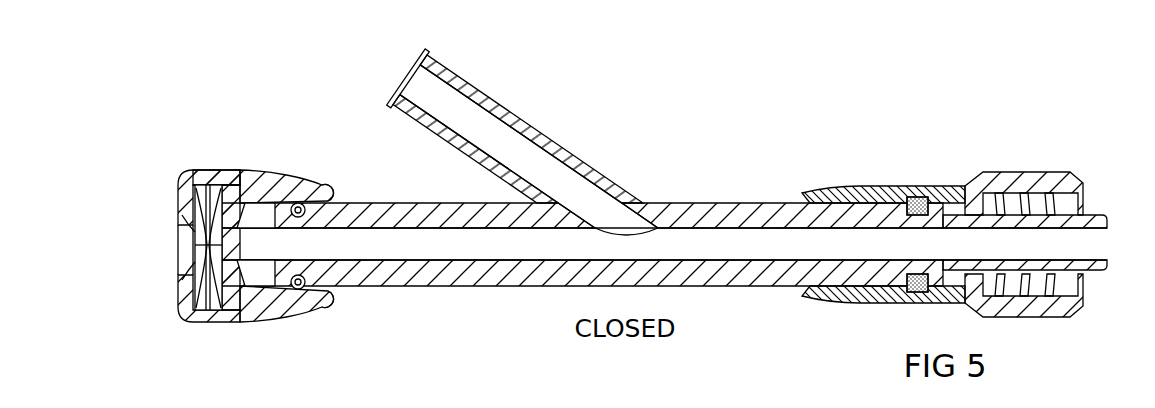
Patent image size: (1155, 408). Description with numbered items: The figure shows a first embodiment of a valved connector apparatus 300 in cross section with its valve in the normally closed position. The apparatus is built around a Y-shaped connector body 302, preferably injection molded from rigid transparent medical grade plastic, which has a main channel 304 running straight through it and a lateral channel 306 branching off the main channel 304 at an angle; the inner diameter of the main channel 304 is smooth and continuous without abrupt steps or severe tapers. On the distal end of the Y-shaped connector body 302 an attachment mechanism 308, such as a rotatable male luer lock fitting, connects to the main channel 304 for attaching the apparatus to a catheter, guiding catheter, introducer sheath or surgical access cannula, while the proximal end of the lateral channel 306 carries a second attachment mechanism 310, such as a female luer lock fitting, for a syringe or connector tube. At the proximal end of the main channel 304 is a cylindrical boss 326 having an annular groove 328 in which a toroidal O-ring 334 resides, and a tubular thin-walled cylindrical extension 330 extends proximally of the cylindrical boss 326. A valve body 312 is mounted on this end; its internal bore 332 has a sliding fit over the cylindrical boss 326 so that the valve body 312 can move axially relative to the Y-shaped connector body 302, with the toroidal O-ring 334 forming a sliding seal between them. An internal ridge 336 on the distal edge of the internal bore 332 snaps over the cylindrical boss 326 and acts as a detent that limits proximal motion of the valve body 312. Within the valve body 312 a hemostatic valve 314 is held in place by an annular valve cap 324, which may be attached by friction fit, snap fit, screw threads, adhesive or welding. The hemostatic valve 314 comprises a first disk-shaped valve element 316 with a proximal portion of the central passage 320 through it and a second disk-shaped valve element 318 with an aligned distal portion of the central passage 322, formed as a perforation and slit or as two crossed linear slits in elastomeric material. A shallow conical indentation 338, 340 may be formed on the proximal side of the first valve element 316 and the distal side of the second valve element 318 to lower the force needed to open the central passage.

The valved connector apparatus 300 is at (593, 210).
The Y-shaped connector body 302 is at (655, 207).
The main channel 304 is at (438, 265).
The lateral channel 306 is at (522, 125).
The attachment mechanism 308 is at (862, 154).
The second attachment mechanism 310 is at (438, 62).
The valve body 312 is at (297, 195).
The hemostatic valve 314 is at (242, 241).
The first disk-shaped valve element 316 is at (195, 317).
The second disk-shaped valve element 318 is at (215, 322).
The proximal portion of the central passage 320 is at (205, 248).
The distal portion of the central passage 322 is at (247, 300).
The annular valve cap 324 is at (205, 178).
The cylindrical boss 326 is at (335, 298).
The annular groove 328 is at (335, 275).
The tubular thin-walled cylindrical extension 330 is at (283, 295).
The internal bore 332 is at (262, 198).
The toroidal O-ring 334 is at (303, 290).
The internal ridge 336 is at (333, 192).
The shallow conical indentation 338 is at (190, 222).
The shallow conical indentation 340 is at (212, 244).